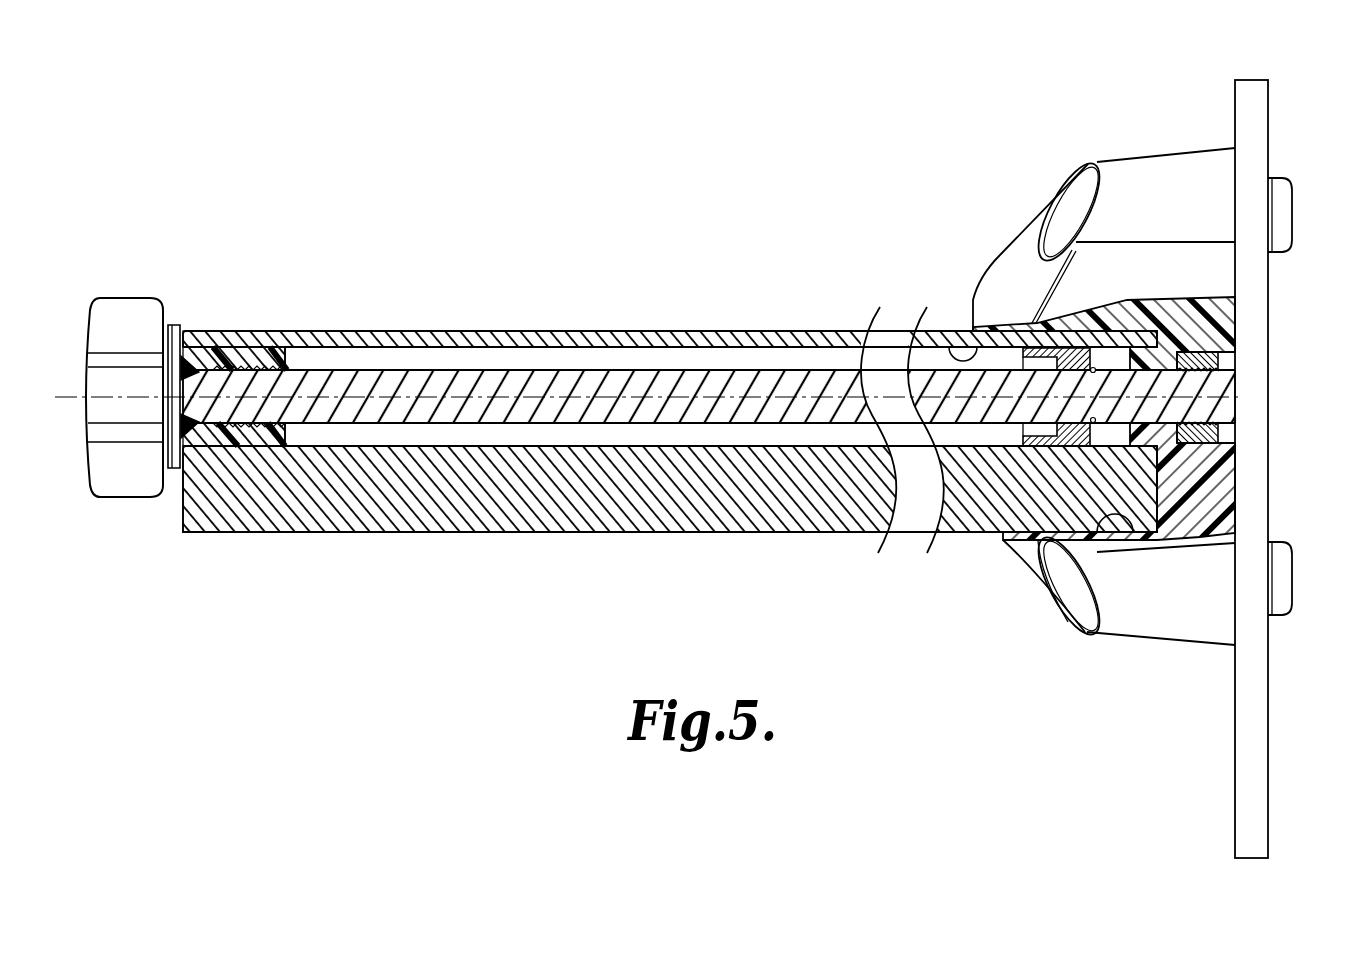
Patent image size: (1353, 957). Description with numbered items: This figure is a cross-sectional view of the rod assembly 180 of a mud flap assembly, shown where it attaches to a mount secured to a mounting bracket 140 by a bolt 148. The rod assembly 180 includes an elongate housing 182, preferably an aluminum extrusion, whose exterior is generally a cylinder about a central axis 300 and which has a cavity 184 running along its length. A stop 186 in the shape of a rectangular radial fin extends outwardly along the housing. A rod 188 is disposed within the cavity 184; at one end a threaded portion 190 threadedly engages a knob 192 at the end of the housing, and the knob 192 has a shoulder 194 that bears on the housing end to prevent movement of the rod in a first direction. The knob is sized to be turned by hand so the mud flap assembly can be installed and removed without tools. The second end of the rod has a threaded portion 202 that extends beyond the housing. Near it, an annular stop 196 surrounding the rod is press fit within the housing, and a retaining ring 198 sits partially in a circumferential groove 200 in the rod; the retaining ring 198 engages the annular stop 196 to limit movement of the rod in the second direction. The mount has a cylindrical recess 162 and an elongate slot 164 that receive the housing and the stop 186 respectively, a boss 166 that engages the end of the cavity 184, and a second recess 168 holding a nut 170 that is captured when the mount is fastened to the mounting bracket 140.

The mounting bracket 140 is at (1268, 118).
The bolt 148 is at (1288, 212).
The cylindrical recess 162 is at (950, 330).
The elongate slot 164 is at (1135, 537).
The boss 166 is at (1127, 302).
The second recess 168 is at (1218, 425).
The nut 170 is at (1218, 360).
The rod assembly 180 is at (516, 305).
The elongate housing 182 is at (348, 330).
The cavity 184 is at (420, 352).
The stop 186 is at (487, 534).
The rod 188 is at (612, 370).
The threaded portion 190 is at (261, 366).
The knob 192 is at (127, 300).
The shoulder 194 is at (185, 323).
The annular stop 196 is at (1040, 440).
The retaining ring 198 is at (1160, 470).
The circumferential groove 200 is at (1095, 418).
The threaded portion 202 is at (1092, 357).
The central axis 300 is at (74, 395).